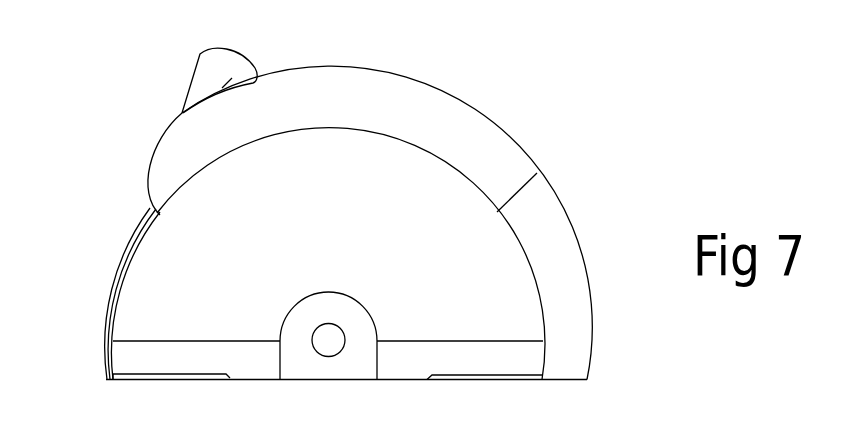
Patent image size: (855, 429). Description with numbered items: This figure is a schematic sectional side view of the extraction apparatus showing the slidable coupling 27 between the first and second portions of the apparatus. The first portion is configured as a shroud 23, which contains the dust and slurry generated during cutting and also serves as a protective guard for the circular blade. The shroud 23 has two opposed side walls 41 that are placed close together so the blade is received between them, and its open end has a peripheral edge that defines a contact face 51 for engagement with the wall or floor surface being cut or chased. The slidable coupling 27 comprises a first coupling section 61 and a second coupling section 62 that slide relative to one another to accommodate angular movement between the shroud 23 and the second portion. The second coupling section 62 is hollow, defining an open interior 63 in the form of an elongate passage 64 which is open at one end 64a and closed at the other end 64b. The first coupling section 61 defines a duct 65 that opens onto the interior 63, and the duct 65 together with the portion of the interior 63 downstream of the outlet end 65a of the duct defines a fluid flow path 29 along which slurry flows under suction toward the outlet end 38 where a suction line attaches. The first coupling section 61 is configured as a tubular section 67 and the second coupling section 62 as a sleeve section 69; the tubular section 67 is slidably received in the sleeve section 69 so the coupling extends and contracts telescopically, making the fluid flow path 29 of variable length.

The shroud 23 is at (187, 258).
The slidable coupling 27 is at (507, 145).
The fluid flow path 29 is at (435, 130).
The outlet end 38 is at (208, 67).
The side walls 41 is at (158, 317).
The contact face 51 is at (472, 380).
The first coupling section 61 is at (592, 330).
The second coupling section 62 is at (153, 142).
The open interior 63 is at (273, 95).
The elongate passage 64 is at (310, 100).
The open end 64a is at (527, 180).
The closed end 64b is at (147, 168).
The duct 65 is at (460, 145).
The outlet end of the duct 65a is at (387, 117).
The tubular section 67 is at (542, 231).
The sleeve section 69 is at (366, 47).